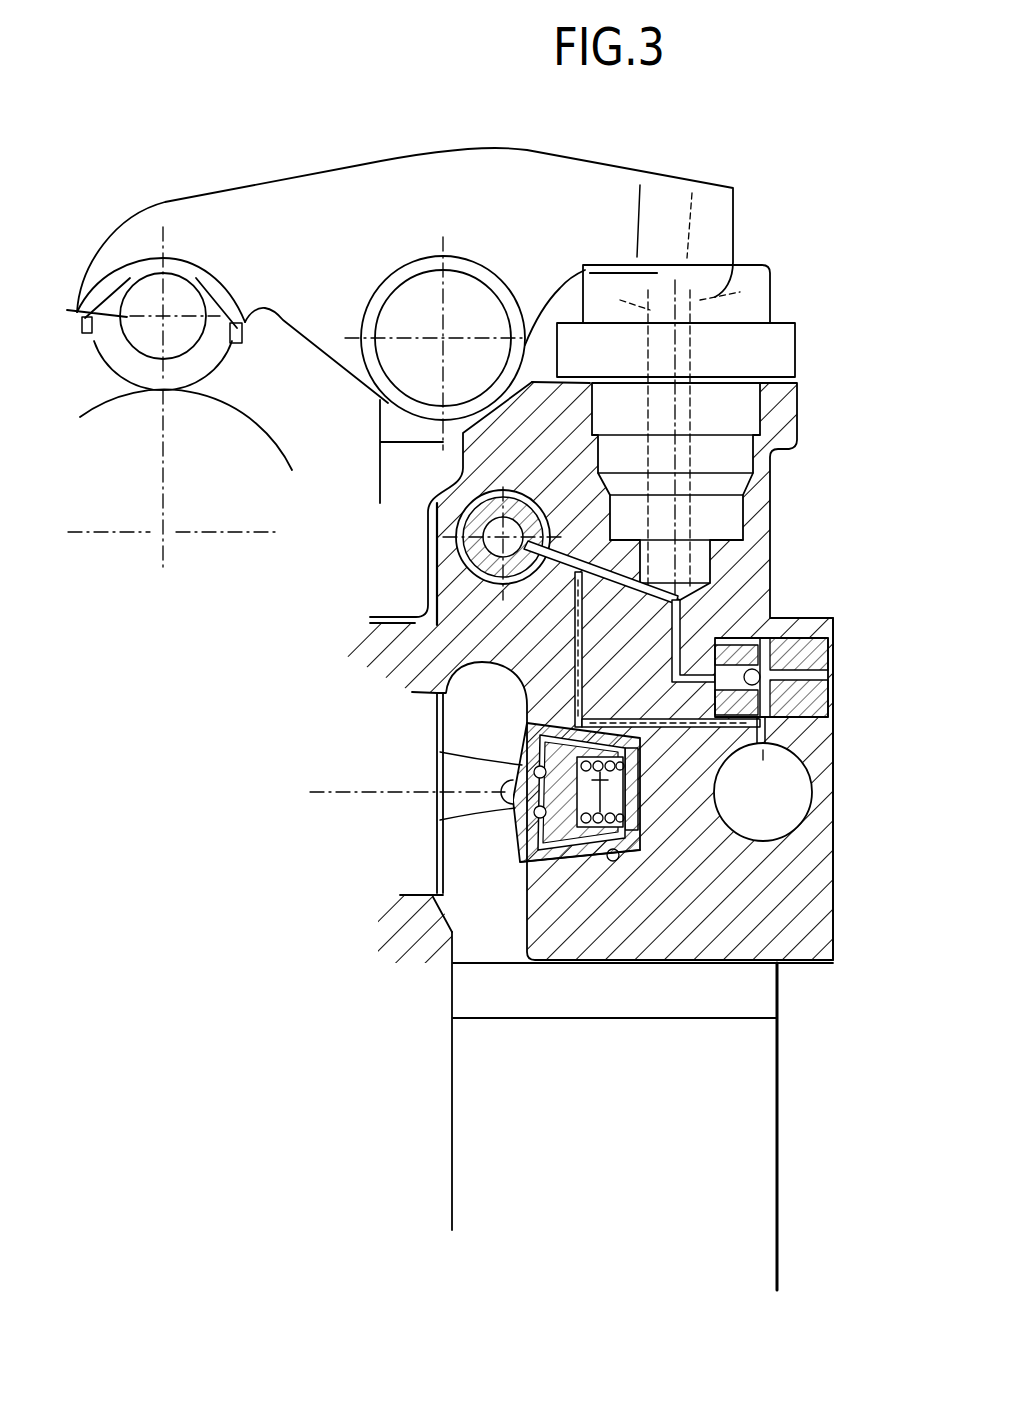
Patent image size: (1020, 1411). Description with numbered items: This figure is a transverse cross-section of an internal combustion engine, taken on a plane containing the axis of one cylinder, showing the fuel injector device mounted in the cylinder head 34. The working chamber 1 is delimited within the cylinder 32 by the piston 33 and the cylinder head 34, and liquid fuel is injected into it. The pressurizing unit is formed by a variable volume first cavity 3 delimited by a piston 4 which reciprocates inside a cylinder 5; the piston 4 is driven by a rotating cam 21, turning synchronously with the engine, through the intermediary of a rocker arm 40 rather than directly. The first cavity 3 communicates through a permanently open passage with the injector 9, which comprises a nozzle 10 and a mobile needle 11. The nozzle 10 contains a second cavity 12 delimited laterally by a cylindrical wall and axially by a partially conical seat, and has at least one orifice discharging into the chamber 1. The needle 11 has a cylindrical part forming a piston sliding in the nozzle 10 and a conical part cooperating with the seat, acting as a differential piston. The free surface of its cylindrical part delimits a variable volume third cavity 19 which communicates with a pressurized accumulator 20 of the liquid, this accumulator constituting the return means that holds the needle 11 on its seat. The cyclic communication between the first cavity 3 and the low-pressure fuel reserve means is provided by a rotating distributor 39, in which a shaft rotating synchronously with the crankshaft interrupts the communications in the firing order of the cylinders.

The chamber 1 is at (480, 930).
The first cavity 3 is at (697, 592).
The piston 4 is at (707, 515).
The cylinder 5 is at (740, 460).
The injector 9 is at (495, 828).
The nozzle 10 is at (527, 862).
The needle 11 is at (560, 775).
The second cavity 12 is at (520, 797).
The third cavity 19 is at (640, 820).
The accumulator 20 is at (793, 785).
The cam 21 is at (248, 412).
The cylinder 32 is at (777, 1000).
The piston 33 is at (620, 1104).
The cylinder head 34 is at (818, 912).
The rotating distributor 39 is at (457, 560).
The rocker arm 40 is at (383, 185).